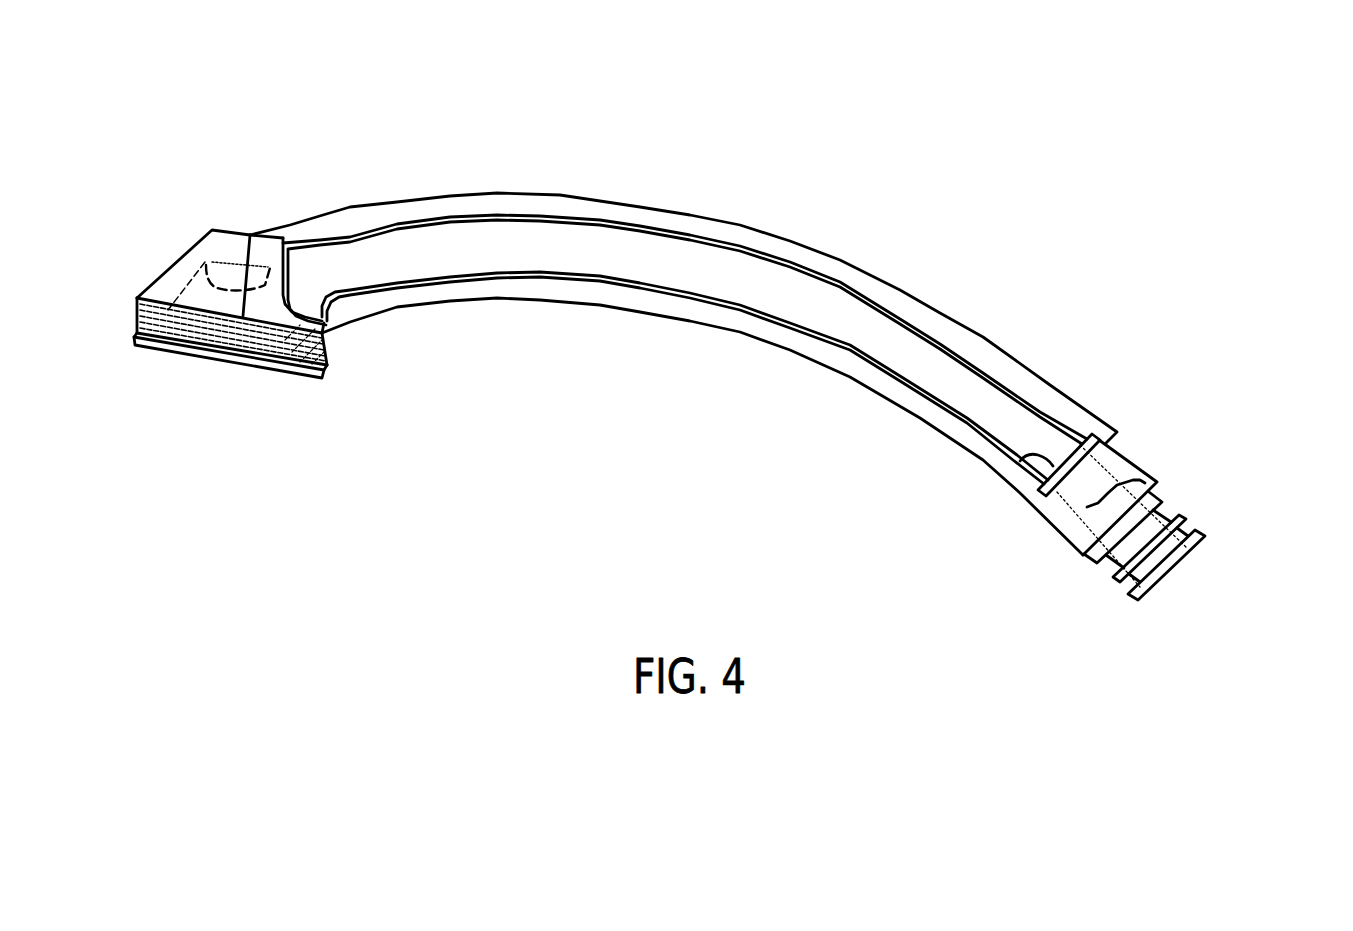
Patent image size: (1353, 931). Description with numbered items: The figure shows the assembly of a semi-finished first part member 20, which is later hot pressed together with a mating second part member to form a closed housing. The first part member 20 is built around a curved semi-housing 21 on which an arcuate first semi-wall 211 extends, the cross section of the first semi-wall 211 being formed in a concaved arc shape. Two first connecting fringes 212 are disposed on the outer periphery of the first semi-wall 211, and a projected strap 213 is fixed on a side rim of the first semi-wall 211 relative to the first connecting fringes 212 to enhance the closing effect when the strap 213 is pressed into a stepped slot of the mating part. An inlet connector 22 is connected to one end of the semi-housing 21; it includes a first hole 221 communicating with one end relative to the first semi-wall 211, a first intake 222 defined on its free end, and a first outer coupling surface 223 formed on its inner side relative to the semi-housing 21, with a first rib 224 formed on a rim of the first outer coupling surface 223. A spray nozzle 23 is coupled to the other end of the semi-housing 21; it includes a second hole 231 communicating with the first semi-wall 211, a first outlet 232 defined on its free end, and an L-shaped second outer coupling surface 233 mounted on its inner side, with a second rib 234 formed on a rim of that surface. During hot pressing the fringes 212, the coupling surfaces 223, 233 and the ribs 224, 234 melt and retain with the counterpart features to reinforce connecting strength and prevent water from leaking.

The first part member 20 is at (730, 168).
The semi-housing 21 is at (749, 342).
The first semi-wall 211 is at (623, 250).
The first connecting fringes 212 is at (775, 252).
The projected strap 213 is at (860, 295).
The inlet connector 22 is at (1137, 465).
The first hole 221 is at (1160, 568).
The first intake 222 is at (1195, 553).
The first outer coupling surface 223 is at (1112, 447).
The first rib 224 is at (1024, 491).
The spray nozzle 23 is at (160, 273).
The second hole 231 is at (197, 355).
The first outlet 232 is at (253, 368).
The second outer coupling surface 233 is at (206, 265).
The second rib 234 is at (285, 272).